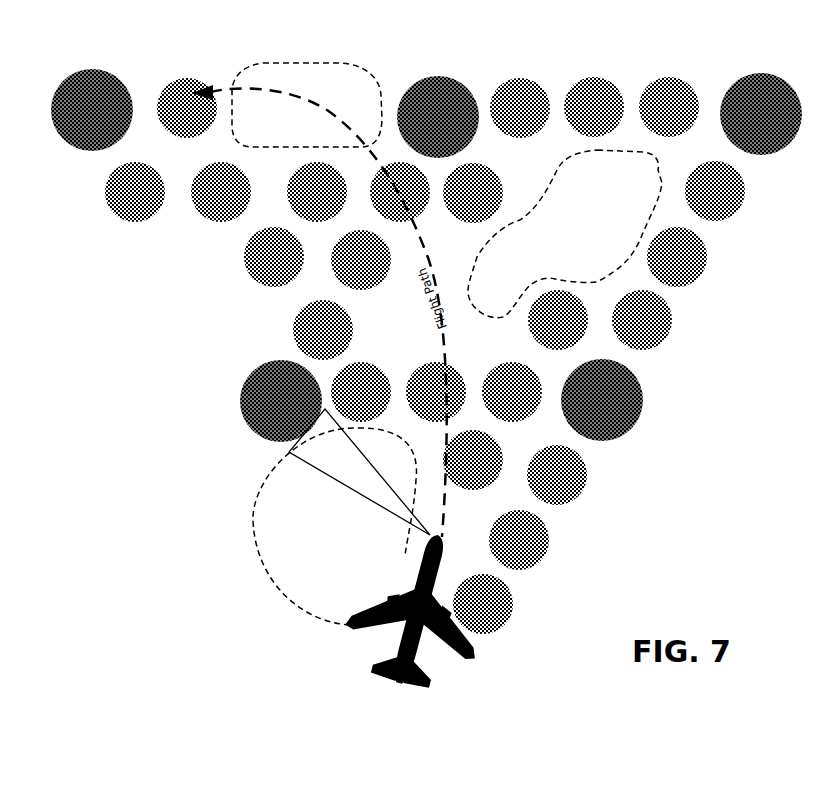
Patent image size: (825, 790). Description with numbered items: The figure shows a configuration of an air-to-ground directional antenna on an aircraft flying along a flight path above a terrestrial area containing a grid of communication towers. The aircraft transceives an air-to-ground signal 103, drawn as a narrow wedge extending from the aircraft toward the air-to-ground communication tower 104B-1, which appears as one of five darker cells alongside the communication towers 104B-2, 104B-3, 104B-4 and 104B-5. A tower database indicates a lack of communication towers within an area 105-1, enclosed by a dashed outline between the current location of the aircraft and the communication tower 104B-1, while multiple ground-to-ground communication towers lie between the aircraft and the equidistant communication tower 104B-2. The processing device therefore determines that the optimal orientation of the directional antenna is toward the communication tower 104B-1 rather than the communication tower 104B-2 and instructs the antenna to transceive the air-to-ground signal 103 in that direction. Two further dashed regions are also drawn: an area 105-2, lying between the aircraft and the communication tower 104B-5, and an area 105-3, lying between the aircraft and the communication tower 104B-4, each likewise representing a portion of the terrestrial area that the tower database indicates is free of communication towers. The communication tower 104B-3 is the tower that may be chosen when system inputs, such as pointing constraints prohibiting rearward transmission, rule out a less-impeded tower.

The air-to-ground communication tower 104B-1 is at (281, 401).
The communication tower 104B-2 is at (602, 400).
The communication tower 104B-3 is at (92, 110).
The communication tower 104B-4 is at (438, 117).
The communication tower 104B-5 is at (761, 114).
The area 105-1 is at (335, 526).
The area 105-2 is at (565, 234).
The area 105-3 is at (307, 105).
The air-to-ground signal 103 is at (359, 472).